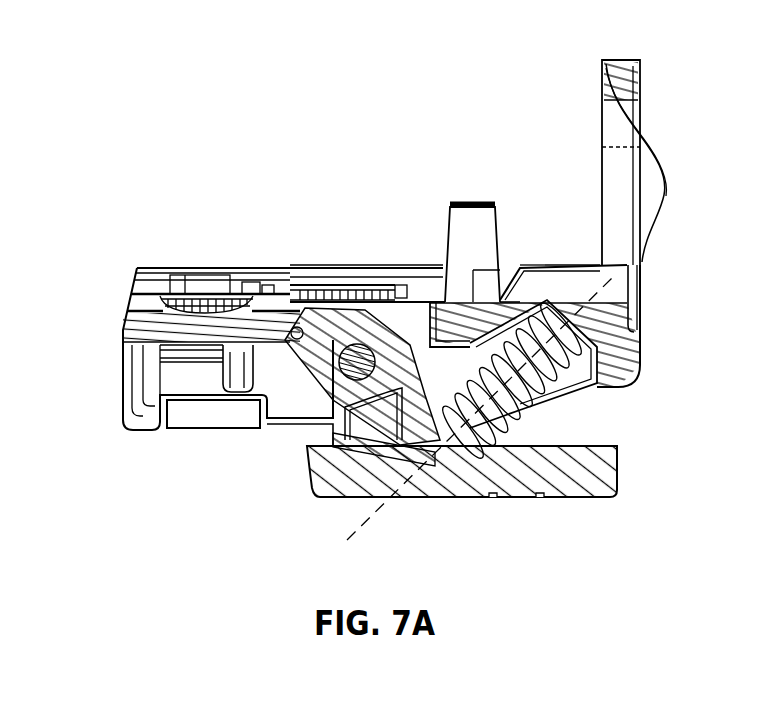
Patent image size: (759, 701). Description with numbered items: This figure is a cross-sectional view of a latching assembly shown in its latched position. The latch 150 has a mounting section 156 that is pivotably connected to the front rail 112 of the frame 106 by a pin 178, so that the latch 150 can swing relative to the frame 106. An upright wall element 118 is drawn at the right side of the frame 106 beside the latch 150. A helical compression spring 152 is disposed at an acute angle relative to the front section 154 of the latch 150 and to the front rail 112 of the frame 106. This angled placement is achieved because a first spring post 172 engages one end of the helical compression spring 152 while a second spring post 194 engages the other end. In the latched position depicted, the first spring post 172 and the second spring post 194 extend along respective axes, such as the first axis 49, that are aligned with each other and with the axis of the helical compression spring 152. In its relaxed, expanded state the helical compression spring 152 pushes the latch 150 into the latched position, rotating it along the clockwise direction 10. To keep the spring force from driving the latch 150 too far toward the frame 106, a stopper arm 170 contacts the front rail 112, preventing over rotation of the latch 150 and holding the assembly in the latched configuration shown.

The clockwise direction 10 is at (215, 33).
The first axis 49 is at (554, 265).
The frame 106 is at (351, 262).
The front rail 112 is at (247, 299).
The side wall 118 is at (612, 135).
The latch 150 is at (294, 466).
The helical compression spring 152 is at (520, 408).
The front section 154 is at (624, 484).
The mounting section 156 is at (341, 316).
The stopper arm 170 is at (290, 345).
The first spring post 172 is at (508, 495).
The pin 178 is at (277, 266).
The second spring post 194 is at (632, 327).